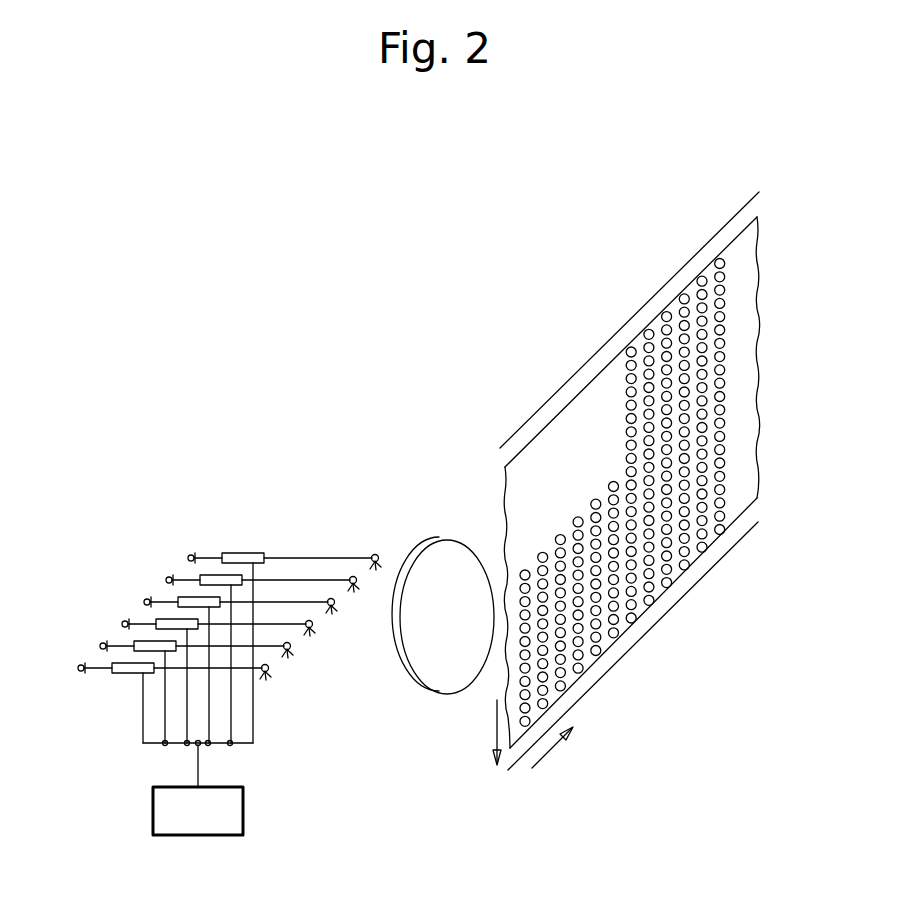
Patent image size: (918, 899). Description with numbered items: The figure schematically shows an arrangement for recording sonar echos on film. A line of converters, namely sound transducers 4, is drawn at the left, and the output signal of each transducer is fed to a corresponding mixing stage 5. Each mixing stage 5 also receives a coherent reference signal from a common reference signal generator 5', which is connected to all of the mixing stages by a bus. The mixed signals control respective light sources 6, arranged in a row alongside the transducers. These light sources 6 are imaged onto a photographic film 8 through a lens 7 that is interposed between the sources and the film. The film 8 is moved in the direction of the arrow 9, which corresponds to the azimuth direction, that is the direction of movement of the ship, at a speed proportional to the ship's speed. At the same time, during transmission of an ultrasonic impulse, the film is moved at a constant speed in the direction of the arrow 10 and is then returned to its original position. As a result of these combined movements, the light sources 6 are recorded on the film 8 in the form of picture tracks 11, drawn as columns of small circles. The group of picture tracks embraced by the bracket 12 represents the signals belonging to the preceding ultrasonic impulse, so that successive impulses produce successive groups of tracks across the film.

The sound transducers 4 is at (188, 546).
The mixing stages 5 is at (242, 626).
The reference signal generator 5' is at (198, 788).
The light sources 6 is at (390, 567).
The lens 7 is at (443, 615).
The photographic film 8 is at (743, 248).
The arrow 9 is at (552, 754).
The arrow 10 is at (490, 732).
The picture tracks 11 is at (652, 587).
The bracket 12 is at (735, 558).